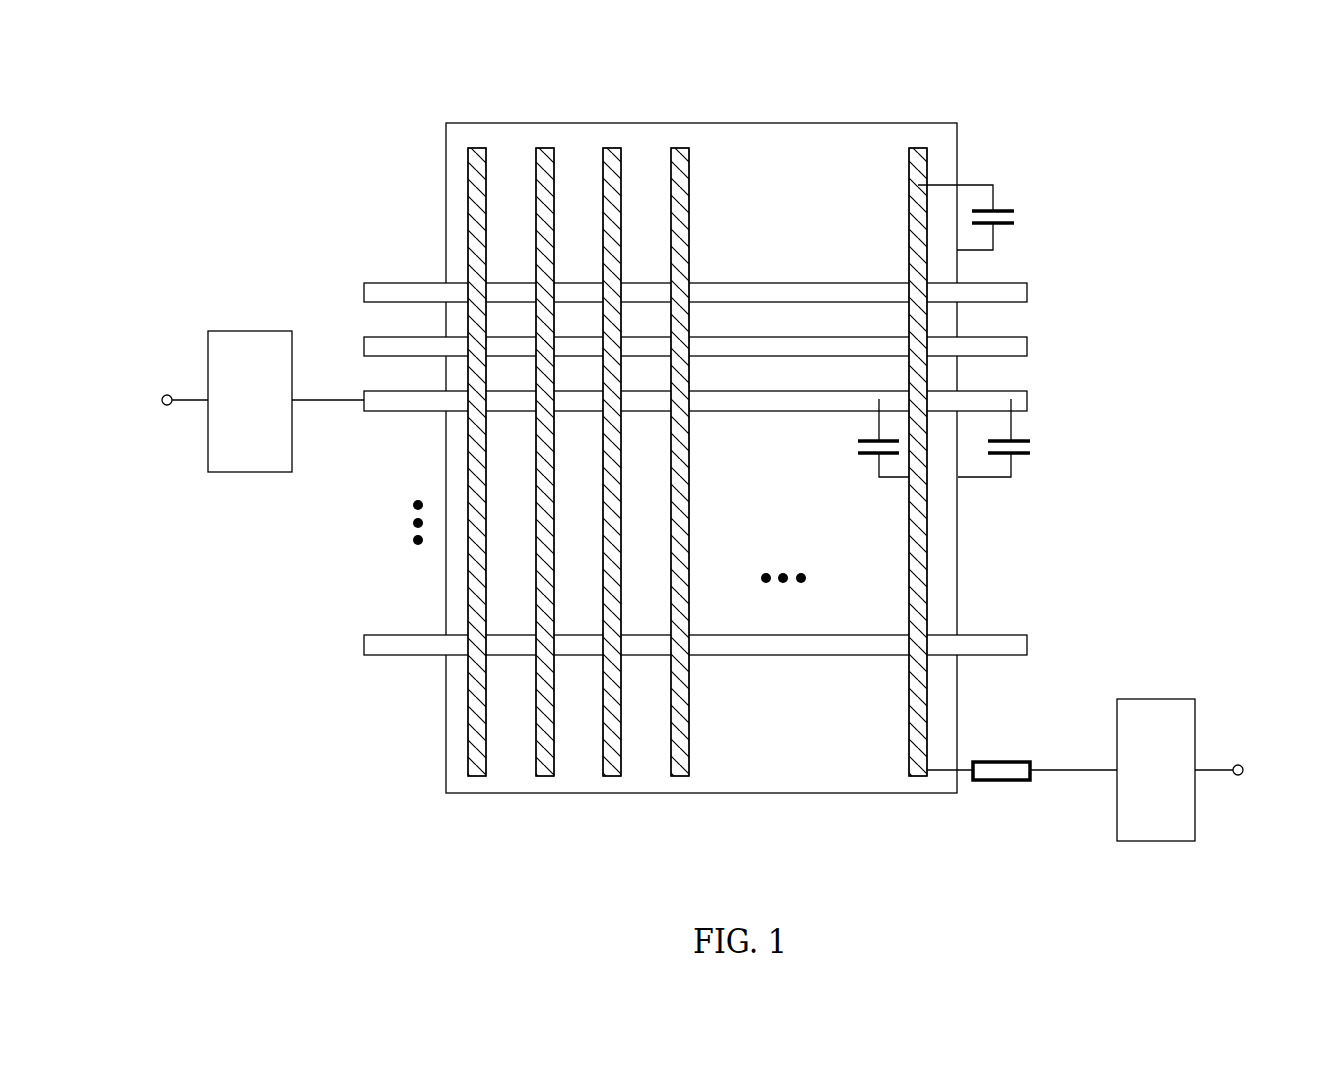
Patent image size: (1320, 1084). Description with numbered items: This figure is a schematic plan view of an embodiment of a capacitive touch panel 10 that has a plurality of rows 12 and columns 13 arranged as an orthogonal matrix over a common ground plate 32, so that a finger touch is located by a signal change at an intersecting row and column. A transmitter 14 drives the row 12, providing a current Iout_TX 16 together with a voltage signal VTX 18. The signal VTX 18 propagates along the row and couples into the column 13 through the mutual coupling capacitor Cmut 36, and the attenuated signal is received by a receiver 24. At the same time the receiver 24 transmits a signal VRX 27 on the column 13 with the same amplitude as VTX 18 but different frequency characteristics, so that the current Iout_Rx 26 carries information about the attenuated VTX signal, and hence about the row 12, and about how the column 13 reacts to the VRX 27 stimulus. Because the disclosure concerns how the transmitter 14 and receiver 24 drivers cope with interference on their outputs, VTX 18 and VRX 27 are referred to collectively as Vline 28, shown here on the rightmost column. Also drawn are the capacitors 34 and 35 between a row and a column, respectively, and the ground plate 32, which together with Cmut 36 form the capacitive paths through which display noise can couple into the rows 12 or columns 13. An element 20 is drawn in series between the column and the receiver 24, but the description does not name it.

The capacitive touch panel 10 is at (820, 80).
The rows 12 is at (1045, 260).
The columns 13 is at (686, 811).
The transmitter 14 is at (242, 461).
The current Iout_TX 16 is at (163, 428).
The voltage signal VTX 18 is at (318, 421).
The resistor 20 is at (1000, 779).
The receiver 24 is at (1146, 825).
The current Iout_Rx 26 is at (1243, 797).
The signal VRX 27 is at (1073, 790).
The Vline 28 is at (914, 526).
The common ground plate 32 is at (808, 196).
The capacitor Cself_row 34 is at (1018, 454).
The capacitor Cself_col 35 is at (1005, 224).
The mutual coupling capacitor Cmut 36 is at (872, 455).